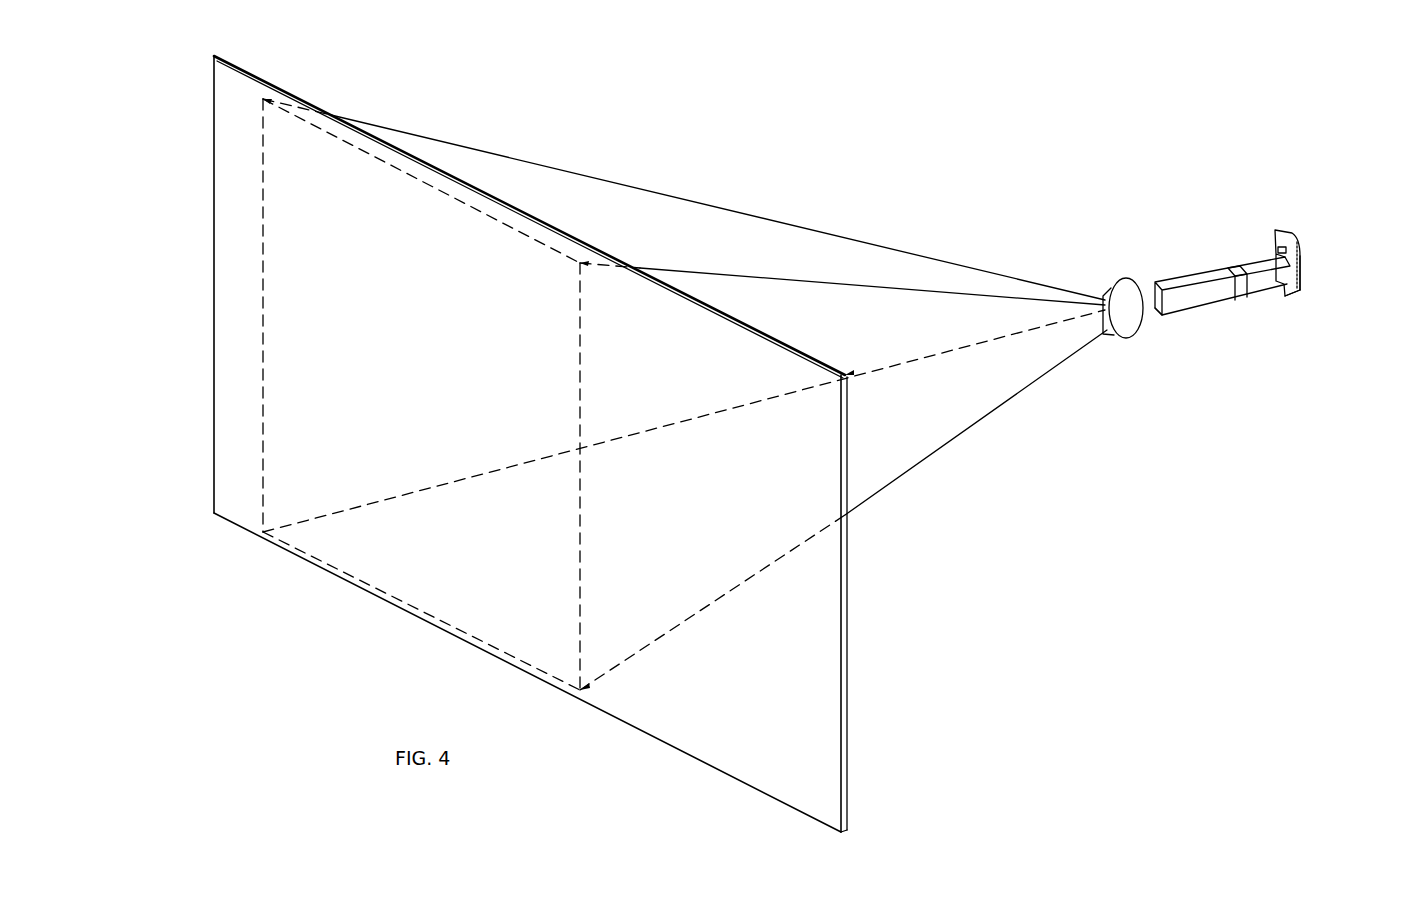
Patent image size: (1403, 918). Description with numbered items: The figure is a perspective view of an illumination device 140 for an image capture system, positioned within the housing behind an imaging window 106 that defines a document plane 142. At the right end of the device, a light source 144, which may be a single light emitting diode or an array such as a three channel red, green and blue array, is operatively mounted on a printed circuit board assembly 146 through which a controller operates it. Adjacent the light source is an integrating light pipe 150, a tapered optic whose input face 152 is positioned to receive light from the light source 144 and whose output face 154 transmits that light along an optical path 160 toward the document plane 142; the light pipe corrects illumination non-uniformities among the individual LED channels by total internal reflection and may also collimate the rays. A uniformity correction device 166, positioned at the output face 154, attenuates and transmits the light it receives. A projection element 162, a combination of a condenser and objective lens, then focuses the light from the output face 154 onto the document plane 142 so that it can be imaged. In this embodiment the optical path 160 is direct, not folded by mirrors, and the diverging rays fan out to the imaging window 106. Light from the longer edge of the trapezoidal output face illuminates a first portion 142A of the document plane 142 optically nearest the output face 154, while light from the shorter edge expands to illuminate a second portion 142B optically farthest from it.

The imaging window 106 is at (290, 88).
The document plane 142 is at (212, 275).
The first portion of document plane 142A is at (264, 330).
The second portion of document plane 142B is at (582, 540).
The optical path 160 is at (835, 232).
The illumination device 140 is at (1154, 178).
The projection element 162 is at (1133, 340).
The uniformity correction device 166 is at (1147, 283).
The integrating light pipe 150 is at (1203, 273).
The output face 154 is at (1157, 312).
The printed circuit board assembly 146 is at (1288, 230).
The input face 152 is at (1299, 270).
The light source 144 is at (1287, 306).